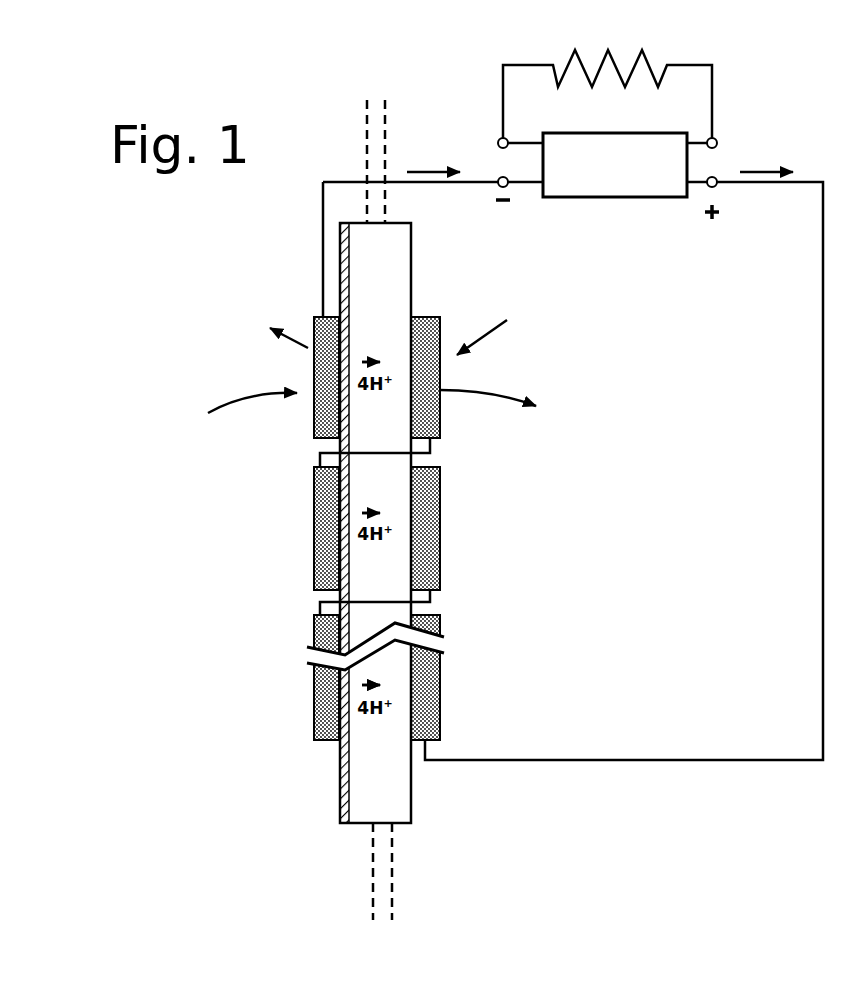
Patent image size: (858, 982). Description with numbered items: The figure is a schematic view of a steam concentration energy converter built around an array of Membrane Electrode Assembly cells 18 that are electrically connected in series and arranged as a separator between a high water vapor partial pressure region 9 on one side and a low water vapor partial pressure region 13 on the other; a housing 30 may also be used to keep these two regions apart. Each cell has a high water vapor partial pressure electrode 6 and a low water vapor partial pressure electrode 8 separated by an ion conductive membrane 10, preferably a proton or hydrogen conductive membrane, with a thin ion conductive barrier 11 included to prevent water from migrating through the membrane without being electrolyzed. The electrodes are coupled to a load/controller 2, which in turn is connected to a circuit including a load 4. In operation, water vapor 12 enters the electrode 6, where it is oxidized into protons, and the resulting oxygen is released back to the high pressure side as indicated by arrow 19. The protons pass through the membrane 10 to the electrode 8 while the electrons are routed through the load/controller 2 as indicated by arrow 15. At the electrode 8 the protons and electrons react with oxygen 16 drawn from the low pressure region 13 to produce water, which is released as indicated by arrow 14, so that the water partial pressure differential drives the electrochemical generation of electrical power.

The load/controller 2 is at (630, 197).
The load 4 is at (570, 60).
The high water vapor partial pressure electrode 6 is at (310, 316).
The low water vapor partial pressure electrode 8 is at (440, 313).
The high water vapor partial pressure region 9 is at (233, 527).
The ion conductive membrane 10 is at (363, 238).
The ion conductive barrier 11 is at (340, 773).
The water vapor 12 is at (208, 413).
The low water vapor partial pressure region 13 is at (468, 520).
The arrow (water release) 14 is at (533, 390).
The arrow (electron flow) 15 is at (436, 172).
The oxygen inlet flow 16 is at (488, 340).
The MEA cells 18 is at (313, 425).
The arrow (oxygen release) 19 is at (290, 337).
The housing 30 is at (393, 885).